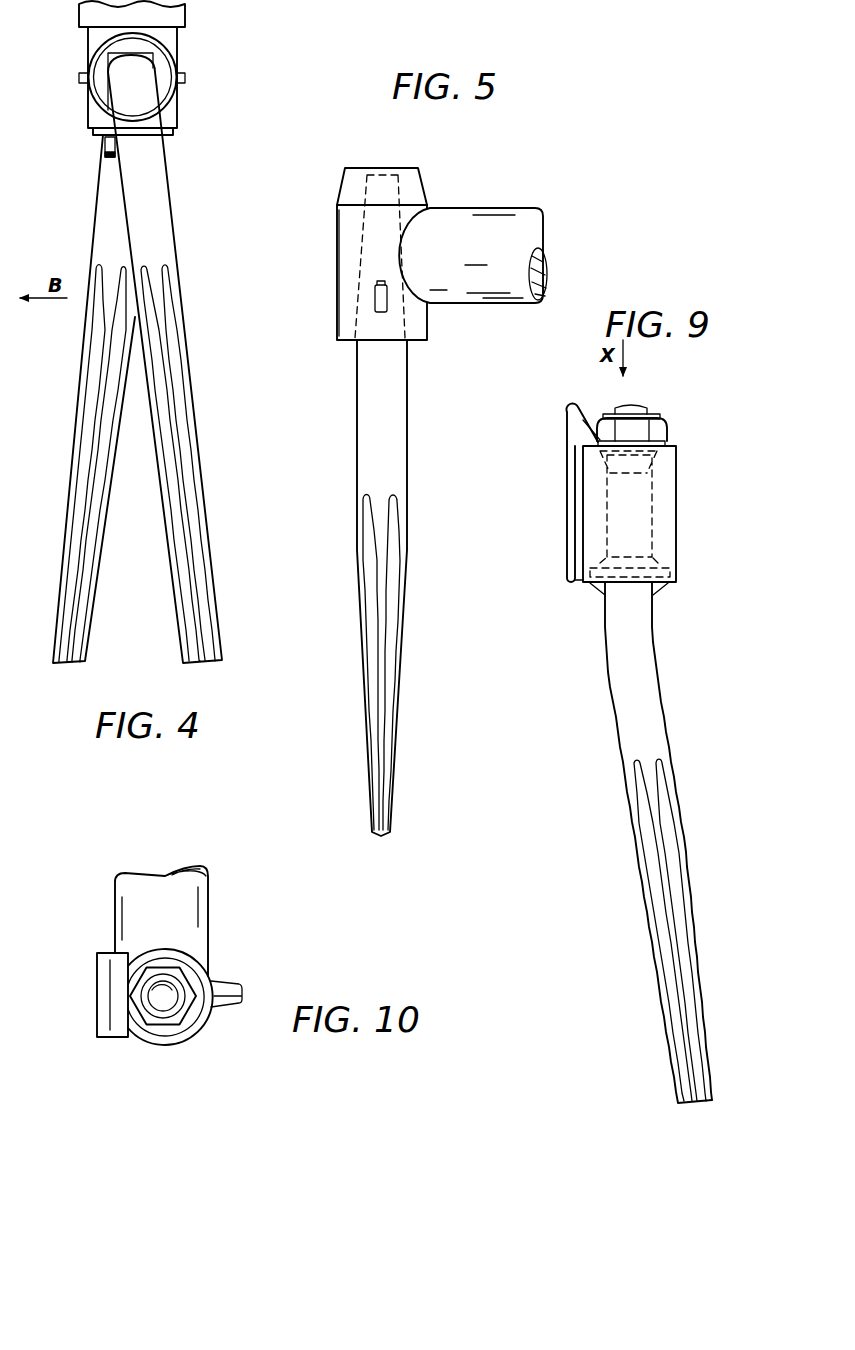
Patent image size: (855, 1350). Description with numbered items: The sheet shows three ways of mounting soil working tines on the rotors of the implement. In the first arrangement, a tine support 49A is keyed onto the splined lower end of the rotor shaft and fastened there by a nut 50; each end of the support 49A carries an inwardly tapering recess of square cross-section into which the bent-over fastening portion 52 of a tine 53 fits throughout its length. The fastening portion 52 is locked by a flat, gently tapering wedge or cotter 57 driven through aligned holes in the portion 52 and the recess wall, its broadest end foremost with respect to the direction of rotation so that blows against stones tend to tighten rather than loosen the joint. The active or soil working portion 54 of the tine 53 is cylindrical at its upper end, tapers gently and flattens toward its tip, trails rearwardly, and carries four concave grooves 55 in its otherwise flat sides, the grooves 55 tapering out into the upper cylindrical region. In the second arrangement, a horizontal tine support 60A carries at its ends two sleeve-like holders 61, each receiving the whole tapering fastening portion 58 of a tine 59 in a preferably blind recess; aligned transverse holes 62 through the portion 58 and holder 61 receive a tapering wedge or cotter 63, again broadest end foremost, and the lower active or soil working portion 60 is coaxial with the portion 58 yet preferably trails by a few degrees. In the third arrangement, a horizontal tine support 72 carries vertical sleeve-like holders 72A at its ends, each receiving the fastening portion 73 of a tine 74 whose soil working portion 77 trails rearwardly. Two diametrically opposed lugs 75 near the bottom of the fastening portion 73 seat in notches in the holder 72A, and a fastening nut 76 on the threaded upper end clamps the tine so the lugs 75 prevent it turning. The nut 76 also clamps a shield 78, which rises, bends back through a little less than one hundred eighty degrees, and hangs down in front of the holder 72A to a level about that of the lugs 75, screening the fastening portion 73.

In FIG. 4, the fastening portion 52 is at (163, 26).
In FIG. 4, the tine support 49A is at (173, 61).
In FIG. 4, the wedge or cotter 57 is at (76, 80).
In FIG. 4, the nut 50 is at (105, 146).
In FIG. 4, the tine 53 is at (190, 311).
In FIG. 4, the active or soil working portion 54 is at (167, 560).
In FIG. 4, the groove 55 is at (192, 499).
In FIG. 5, the fastening portion 58 is at (380, 230).
In FIG. 5, the sleeve-like holder 61 is at (340, 265).
In FIG. 5, the transverse hole 62 is at (383, 283).
In FIG. 5, the wedge or cotter 63 is at (375, 303).
In FIG. 5, the tine support 60A is at (515, 210).
In FIG. 5, the active or soil working portion 60 is at (402, 491).
In FIG. 5, the tine 59 is at (358, 657).
In FIG. 9, the fastening nut 76 is at (657, 430).
In FIG. 9, the sleeve-like tine holder 72A is at (665, 470).
In FIG. 9, the fastening portion 73 is at (637, 509).
In FIG. 9, the projection or lug 75 is at (663, 588).
In FIG. 9, the shield 78 is at (567, 486).
In FIG. 10, the shield 78 is at (100, 981).
In FIG. 9, the tine 74 is at (617, 716).
In FIG. 10, the tine 74 is at (237, 979).
In FIG. 9, the active or soil working portion 77 is at (652, 958).
In FIG. 10, the tine support 72 is at (205, 888).